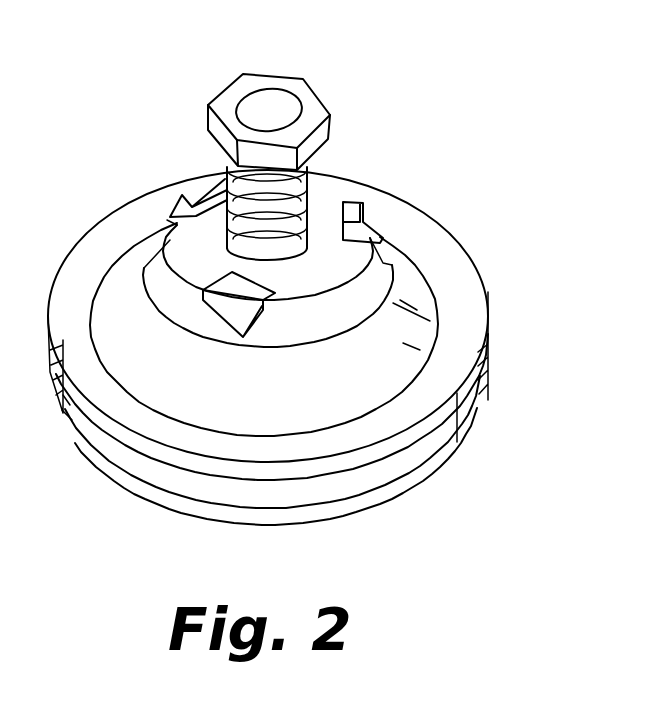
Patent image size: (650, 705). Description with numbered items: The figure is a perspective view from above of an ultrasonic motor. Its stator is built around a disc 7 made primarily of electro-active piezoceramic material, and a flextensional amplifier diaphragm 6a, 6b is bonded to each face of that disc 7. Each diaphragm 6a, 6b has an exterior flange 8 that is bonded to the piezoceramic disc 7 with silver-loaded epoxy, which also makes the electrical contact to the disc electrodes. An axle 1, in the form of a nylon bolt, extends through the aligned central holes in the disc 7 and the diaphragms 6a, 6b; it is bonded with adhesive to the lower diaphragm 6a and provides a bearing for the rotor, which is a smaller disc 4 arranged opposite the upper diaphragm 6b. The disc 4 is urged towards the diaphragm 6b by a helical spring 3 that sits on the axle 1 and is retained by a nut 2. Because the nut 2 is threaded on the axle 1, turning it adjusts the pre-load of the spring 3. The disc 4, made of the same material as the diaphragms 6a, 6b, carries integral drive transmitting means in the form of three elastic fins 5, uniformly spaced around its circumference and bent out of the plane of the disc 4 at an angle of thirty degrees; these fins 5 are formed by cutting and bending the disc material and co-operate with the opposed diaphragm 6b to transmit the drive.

The axle 1 is at (270, 100).
The nut 2 is at (320, 137).
The helical spring 3 is at (225, 178).
The disc 4 is at (350, 261).
The elastic fins 5 is at (362, 224).
The flextensional amplifier diaphragm 6a is at (398, 490).
The flextensional amplifier diaphragm 6b is at (405, 347).
The disc 7 is at (410, 458).
The exterior flange 8 is at (112, 473).